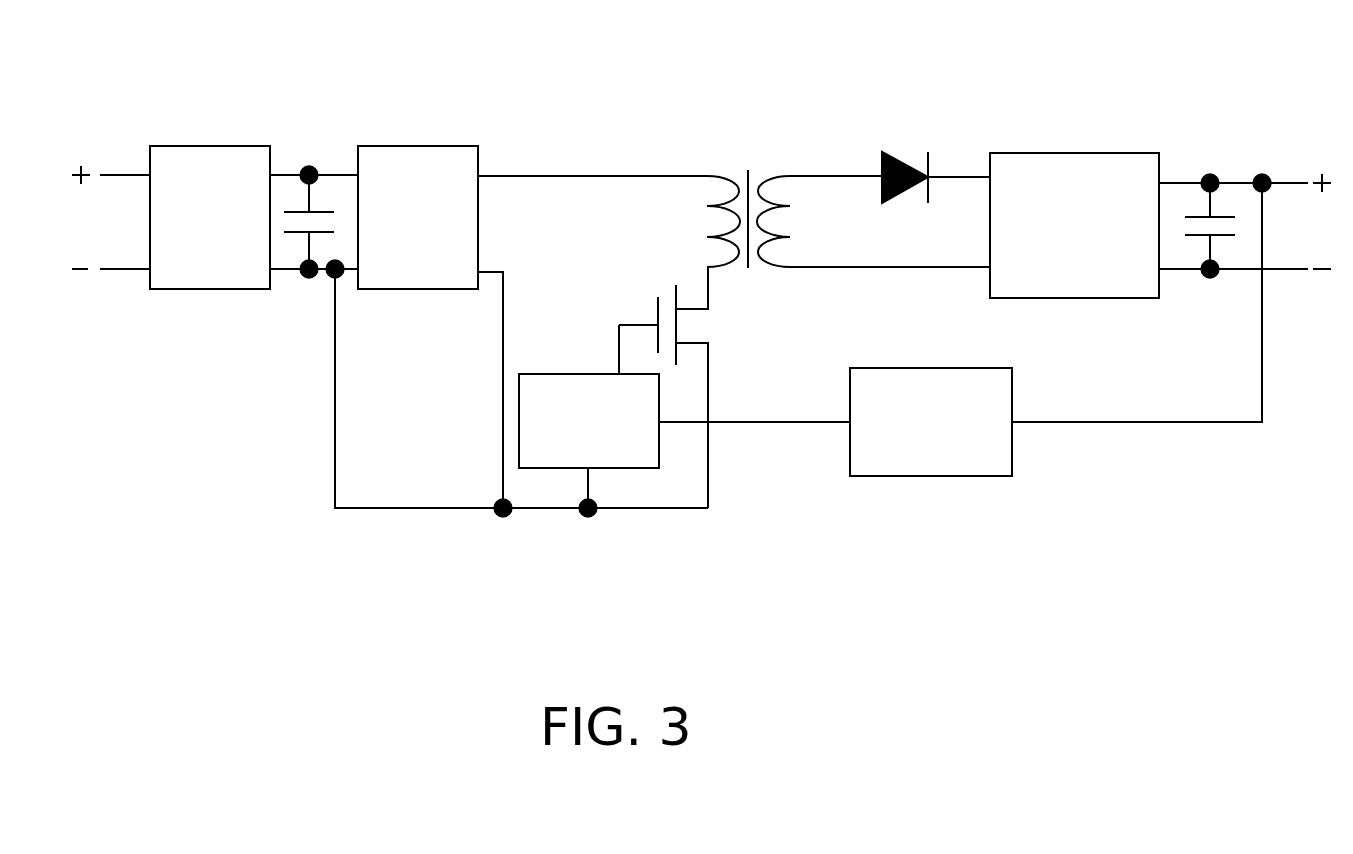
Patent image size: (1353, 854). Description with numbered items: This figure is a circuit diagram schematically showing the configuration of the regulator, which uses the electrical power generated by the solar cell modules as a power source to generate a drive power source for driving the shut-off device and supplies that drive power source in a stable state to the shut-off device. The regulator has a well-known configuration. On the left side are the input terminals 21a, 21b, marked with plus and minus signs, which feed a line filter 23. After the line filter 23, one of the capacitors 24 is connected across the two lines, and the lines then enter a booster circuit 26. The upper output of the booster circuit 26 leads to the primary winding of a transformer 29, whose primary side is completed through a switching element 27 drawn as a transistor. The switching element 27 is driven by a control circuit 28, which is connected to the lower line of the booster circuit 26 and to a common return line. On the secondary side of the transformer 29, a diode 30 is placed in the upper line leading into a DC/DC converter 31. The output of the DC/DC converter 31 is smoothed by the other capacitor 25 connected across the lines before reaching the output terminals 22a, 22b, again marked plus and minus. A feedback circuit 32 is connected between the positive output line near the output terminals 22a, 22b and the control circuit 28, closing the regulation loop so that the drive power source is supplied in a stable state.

The input terminal 21a is at (121, 173).
The input terminal 21b is at (120, 270).
The output terminal 22a is at (1290, 183).
The output terminal 22b is at (1287, 272).
The line filter 23 is at (210, 146).
The capacitor 24 is at (328, 212).
The capacitor 25 is at (1223, 216).
The booster circuit 26 is at (435, 146).
The switching element 27 is at (678, 326).
The control circuit 28 is at (537, 374).
The transformer 29 is at (728, 176).
The diode 30 is at (888, 152).
The DC/DC converter 31 is at (1068, 153).
The feedback circuit 32 is at (931, 476).